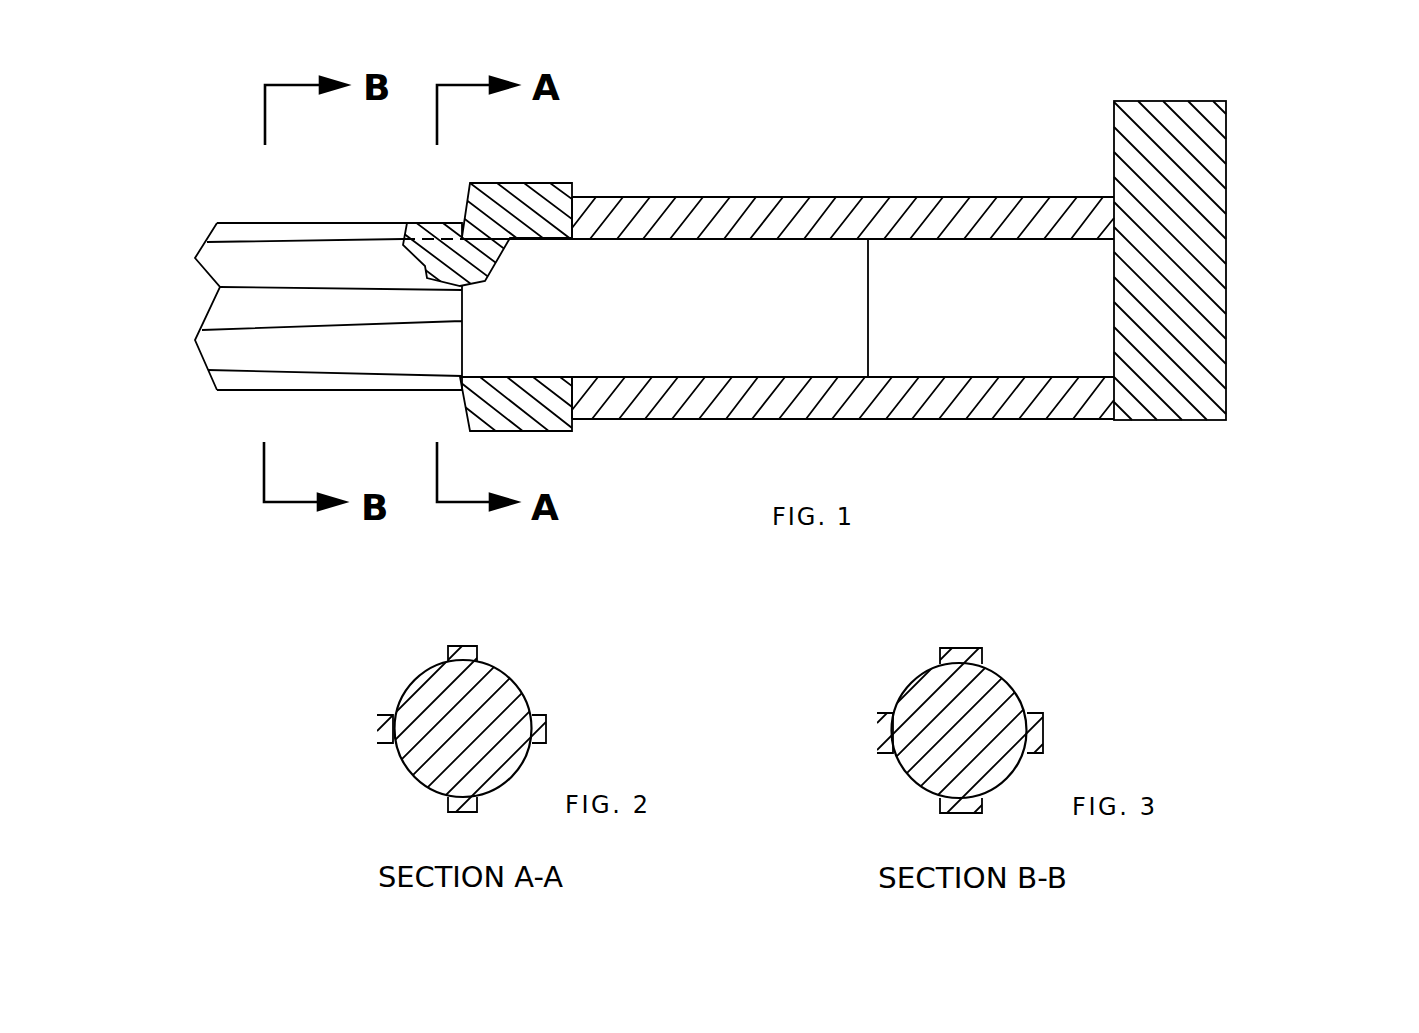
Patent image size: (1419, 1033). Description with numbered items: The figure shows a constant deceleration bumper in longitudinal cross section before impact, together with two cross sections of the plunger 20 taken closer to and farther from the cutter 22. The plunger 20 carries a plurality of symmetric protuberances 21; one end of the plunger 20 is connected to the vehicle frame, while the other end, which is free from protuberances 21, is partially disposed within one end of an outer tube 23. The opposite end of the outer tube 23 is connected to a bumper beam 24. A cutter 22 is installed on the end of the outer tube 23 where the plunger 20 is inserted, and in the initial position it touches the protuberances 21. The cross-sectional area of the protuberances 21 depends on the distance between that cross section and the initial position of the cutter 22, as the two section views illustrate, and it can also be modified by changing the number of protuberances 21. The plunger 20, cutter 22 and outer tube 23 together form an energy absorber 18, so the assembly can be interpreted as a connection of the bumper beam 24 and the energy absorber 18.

In FIG. 1, the energy absorber 18 is at (795, 283).
In FIG. 1, the plunger 20 is at (248, 357).
In FIG. 1, the protuberances 21 is at (280, 223).
In FIG. 2, the protuberances 21 is at (546, 716).
In FIG. 3, the protuberances 21 is at (1043, 723).
In FIG. 1, the cutter 22 is at (525, 183).
In FIG. 1, the outer tube 23 is at (683, 197).
In FIG. 1, the bumper beam 24 is at (1226, 208).